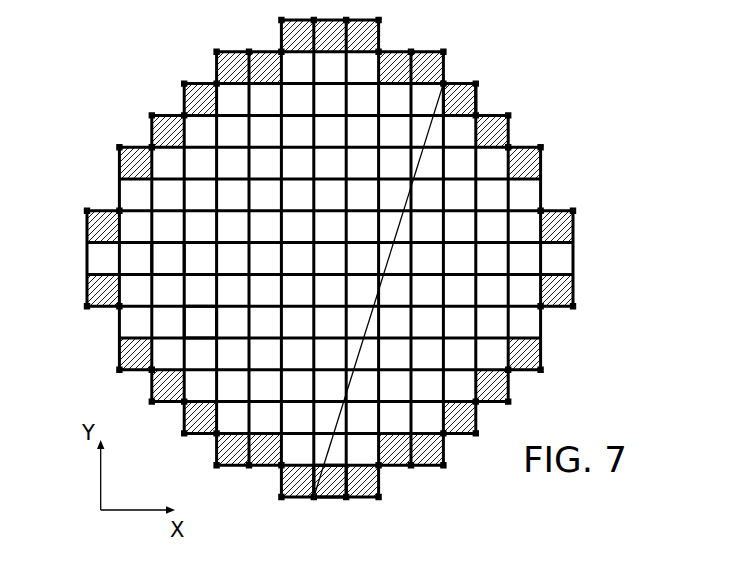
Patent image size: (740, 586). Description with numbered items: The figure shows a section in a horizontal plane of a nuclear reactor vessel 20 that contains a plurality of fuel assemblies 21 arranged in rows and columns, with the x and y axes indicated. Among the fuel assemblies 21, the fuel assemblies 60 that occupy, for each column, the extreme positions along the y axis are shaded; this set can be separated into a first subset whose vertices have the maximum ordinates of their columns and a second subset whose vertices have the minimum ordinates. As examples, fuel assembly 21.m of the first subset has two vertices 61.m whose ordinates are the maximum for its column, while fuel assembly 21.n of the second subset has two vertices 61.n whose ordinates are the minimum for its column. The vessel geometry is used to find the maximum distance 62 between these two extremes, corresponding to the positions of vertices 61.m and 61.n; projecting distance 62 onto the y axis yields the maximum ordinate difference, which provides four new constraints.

The vessel 20 is at (542, 327).
The fuel assemblies 21 is at (167, 258).
The fuel assemblies occupying extreme positions 60 is at (198, 98).
The vertices 61.m is at (476, 84).
The fuel assembly 21.m is at (458, 100).
The vertices 61.n is at (346, 497).
The fuel assembly 21.n is at (337, 485).
The maximum distance 62 is at (358, 357).